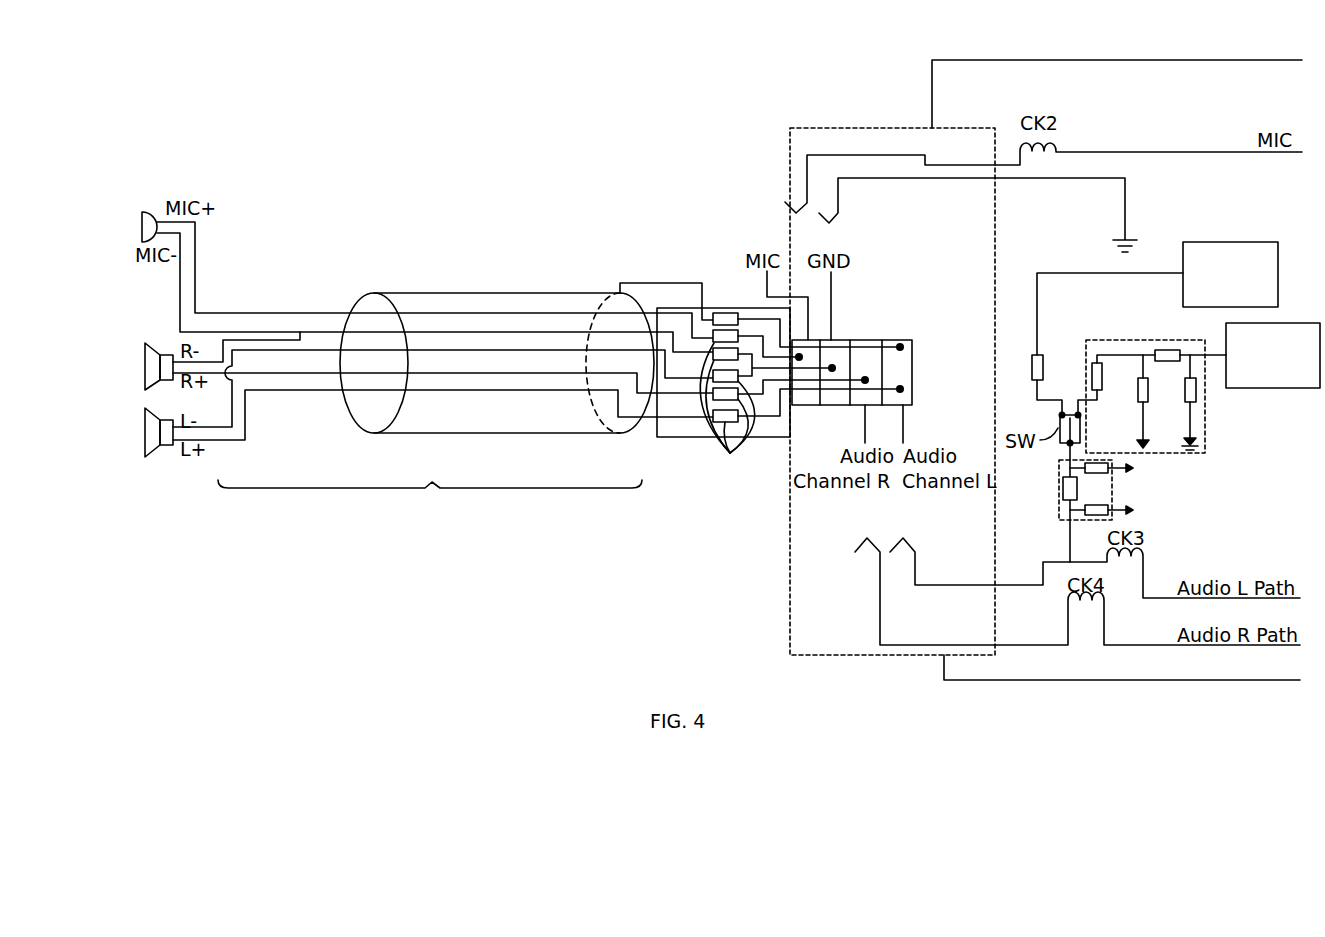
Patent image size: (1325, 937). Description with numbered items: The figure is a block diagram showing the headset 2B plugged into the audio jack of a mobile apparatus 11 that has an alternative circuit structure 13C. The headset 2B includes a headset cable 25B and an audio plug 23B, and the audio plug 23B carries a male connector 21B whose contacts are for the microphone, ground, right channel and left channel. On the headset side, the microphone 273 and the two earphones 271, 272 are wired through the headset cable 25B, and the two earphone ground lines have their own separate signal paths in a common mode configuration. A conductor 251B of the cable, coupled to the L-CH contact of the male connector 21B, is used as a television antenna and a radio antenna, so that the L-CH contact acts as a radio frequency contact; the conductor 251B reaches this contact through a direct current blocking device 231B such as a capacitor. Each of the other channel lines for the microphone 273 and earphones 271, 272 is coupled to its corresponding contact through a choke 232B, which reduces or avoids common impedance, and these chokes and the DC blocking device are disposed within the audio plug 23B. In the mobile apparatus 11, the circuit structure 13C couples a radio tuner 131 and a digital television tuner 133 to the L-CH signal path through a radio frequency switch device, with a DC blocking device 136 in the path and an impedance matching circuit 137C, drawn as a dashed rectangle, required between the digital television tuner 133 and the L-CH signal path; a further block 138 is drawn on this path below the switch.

The microphone 273 is at (138, 226).
The earphone 272 is at (141, 366).
The earphone 271 is at (141, 432).
The headset 2B is at (490, 275).
The conductor 251B is at (372, 440).
The headset cable 25B is at (430, 501).
The audio plug 23B is at (680, 438).
The direct current blocking device 231B is at (727, 312).
The choke 232B is at (730, 453).
The male connector 21B is at (833, 407).
The mobile apparatus 11 is at (997, 242).
The circuit structure 13C is at (1098, 58).
The radio tuner 131 is at (1230, 242).
The DC blocking device 136 is at (1043, 368).
The impedance matching circuit 137C is at (1145, 340).
The digital television tuner 133 is at (1275, 388).
The detection circuit 138 is at (1062, 488).